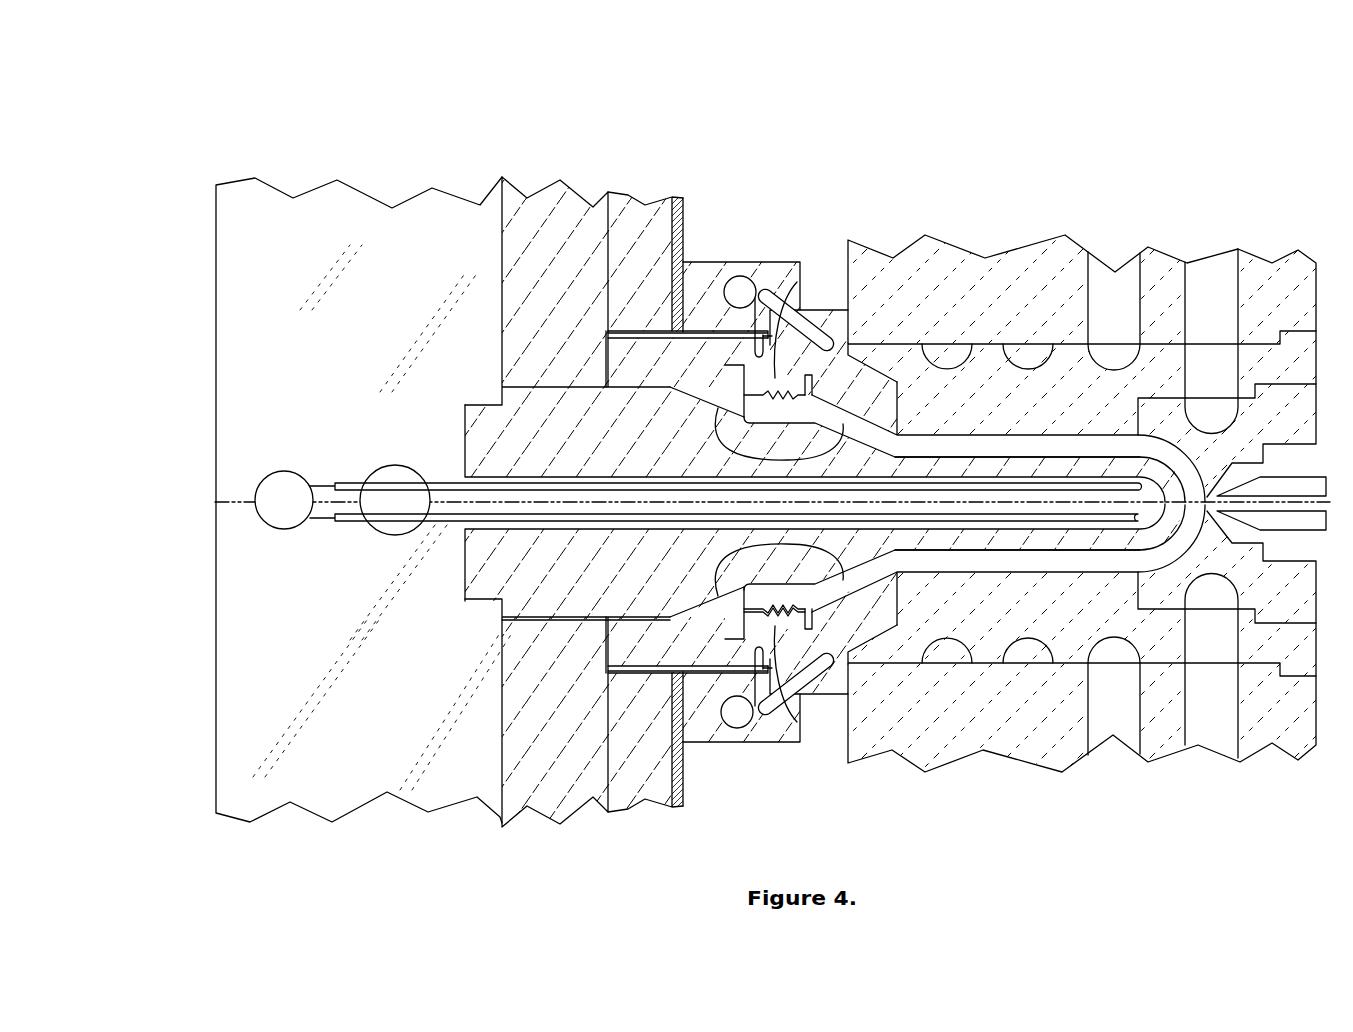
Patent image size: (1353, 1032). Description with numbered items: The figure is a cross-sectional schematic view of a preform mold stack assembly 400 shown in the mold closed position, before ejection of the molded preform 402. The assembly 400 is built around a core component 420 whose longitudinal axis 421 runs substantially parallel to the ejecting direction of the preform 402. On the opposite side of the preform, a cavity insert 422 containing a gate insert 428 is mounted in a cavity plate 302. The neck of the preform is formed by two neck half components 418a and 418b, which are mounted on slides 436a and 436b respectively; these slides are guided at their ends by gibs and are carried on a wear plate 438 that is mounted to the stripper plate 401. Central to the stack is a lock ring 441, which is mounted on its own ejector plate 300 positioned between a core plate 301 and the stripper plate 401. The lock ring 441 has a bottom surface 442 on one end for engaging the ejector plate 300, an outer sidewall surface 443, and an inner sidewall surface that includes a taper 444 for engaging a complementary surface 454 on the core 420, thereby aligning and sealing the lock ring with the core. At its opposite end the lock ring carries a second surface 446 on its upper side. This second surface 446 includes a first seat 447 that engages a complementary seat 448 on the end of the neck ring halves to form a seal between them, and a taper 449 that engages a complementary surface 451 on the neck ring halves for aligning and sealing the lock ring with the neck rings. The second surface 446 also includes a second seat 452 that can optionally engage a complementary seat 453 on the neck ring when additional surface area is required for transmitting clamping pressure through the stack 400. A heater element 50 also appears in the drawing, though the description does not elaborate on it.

The heater 50 is at (740, 602).
The ejector plate 300 is at (527, 223).
The core plate 301 is at (307, 243).
The cavity plate 302 is at (973, 277).
The preform mold stack assembly 400 is at (1187, 170).
The stripper plate 401 is at (618, 232).
The molded preform 402 is at (1000, 560).
The neck half component 418a is at (832, 690).
The neck half component 418b is at (837, 322).
The core component 420 is at (503, 438).
The longitudinal axis 421 is at (243, 500).
The cavity insert 422 is at (1078, 377).
The gate insert 428 is at (1293, 408).
The slide 436a is at (708, 733).
The slide 436b is at (716, 275).
The wear plate 438 is at (678, 250).
The lock ring 441 is at (655, 330).
The bottom surface 442 is at (600, 360).
The outer sidewall surface 443 is at (637, 333).
The taper 444 is at (745, 392).
The second surface 446 is at (746, 668).
The first seat 447 is at (735, 382).
The complementary seat 448 is at (828, 338).
The taper 449 is at (755, 300).
The complementary surface 451 is at (808, 360).
The second seat 452 is at (797, 282).
The complementary seat 453 is at (772, 336).
The complementary surface 454 is at (835, 470).